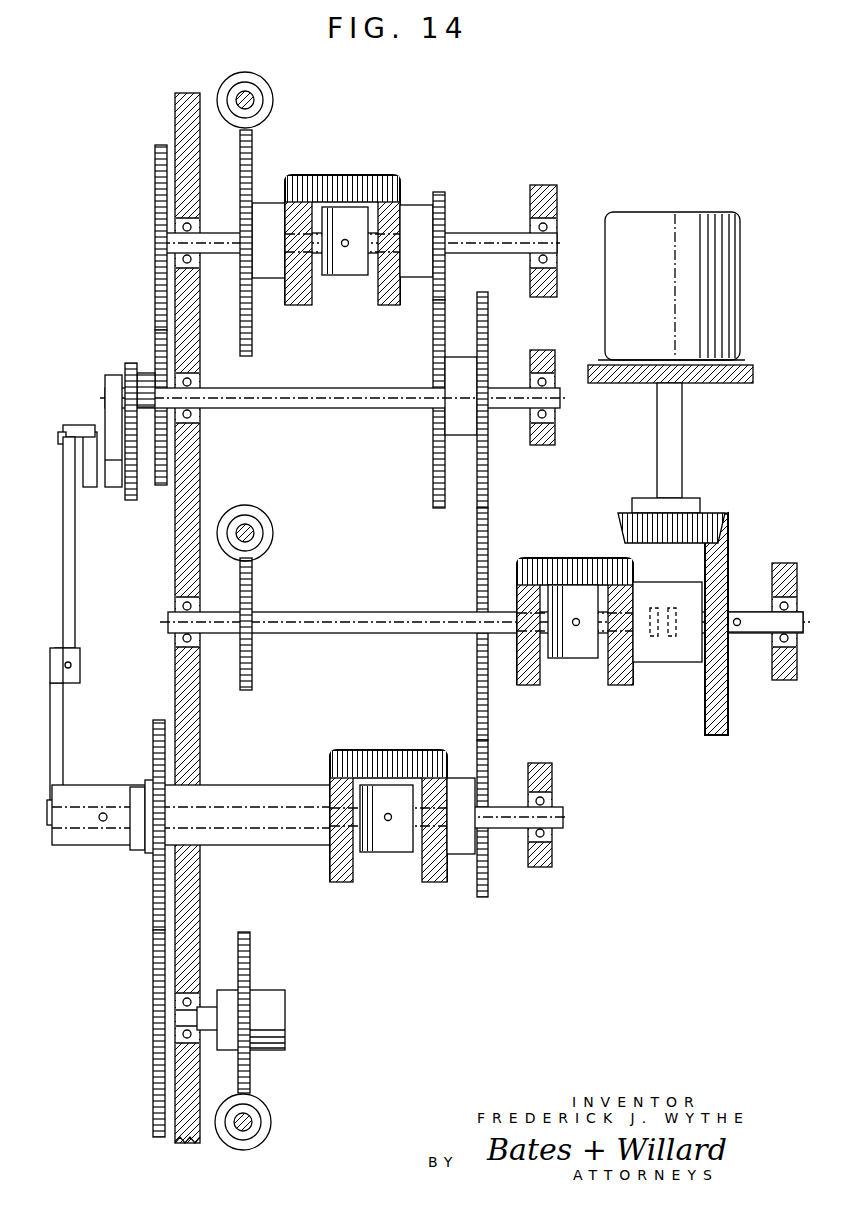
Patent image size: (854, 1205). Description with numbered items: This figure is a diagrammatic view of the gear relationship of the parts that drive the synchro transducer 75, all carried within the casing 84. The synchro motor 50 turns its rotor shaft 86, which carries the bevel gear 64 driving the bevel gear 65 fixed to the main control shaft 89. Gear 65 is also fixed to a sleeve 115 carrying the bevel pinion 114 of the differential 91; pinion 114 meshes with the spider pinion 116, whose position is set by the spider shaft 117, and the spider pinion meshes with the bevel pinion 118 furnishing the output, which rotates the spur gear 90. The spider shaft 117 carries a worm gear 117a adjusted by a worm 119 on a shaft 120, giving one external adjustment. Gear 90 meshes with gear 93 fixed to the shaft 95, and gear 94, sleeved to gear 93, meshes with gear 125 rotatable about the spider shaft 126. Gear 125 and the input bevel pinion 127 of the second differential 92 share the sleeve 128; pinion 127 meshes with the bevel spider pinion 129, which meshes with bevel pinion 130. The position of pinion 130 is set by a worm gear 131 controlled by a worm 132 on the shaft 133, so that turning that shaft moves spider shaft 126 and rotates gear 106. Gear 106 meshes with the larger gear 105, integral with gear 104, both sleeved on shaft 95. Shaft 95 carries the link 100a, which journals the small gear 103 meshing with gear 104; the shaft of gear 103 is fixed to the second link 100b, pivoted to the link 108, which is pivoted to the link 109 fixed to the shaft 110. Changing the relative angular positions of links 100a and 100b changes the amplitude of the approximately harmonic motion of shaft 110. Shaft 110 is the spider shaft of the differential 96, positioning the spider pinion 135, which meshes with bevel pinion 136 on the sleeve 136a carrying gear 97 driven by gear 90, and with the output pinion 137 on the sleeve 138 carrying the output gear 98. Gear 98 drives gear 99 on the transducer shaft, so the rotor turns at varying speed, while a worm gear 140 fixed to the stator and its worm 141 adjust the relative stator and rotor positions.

The synchro motor 50 is at (668, 214).
The bevel gear 64 is at (628, 520).
The bevel gear 65 is at (729, 548).
The synchro transducer 75 is at (273, 991).
The casing 84 is at (182, 102).
The rotor shaft 86 is at (683, 440).
The main control shaft 89 is at (760, 612).
The spur gear 90 is at (490, 538).
The differential 91 is at (578, 660).
The second differential 92 is at (355, 277).
The gear 93 is at (490, 314).
The gear 94 is at (433, 340).
The shaft 95 is at (302, 390).
The differential 96 is at (393, 860).
The gear 97 is at (488, 760).
The output gear 98 is at (153, 888).
The gear 99 is at (153, 995).
The link 100a is at (92, 430).
The second link 100b is at (80, 428).
The small gear 103 is at (115, 490).
The gear 104 is at (130, 362).
The larger gear 105 is at (160, 490).
The gear 106 is at (155, 182).
The link 108 is at (76, 562).
The second link 109 is at (63, 722).
The shaft 110 is at (78, 805).
The bevel pinion 114 is at (615, 686).
The sleeve 115 is at (668, 590).
The spider pinion 116 is at (588, 558).
The spider shaft 117 is at (415, 612).
The worm gear 117a is at (254, 582).
The bevel pinion 118 is at (528, 686).
The worm 119 is at (258, 515).
The shaft 120 is at (252, 532).
The gear 125 is at (447, 208).
The spider shaft 126 is at (453, 238).
The input bevel pinion 127 is at (402, 195).
The sleeve 128 is at (415, 210).
The bevel spider pinion 129 is at (345, 180).
The bevel pinion 130 is at (302, 298).
The worm gear 131 is at (254, 148).
The worm 132 is at (272, 95).
The shaft 133 is at (245, 90).
The spider pinion 135 is at (390, 750).
The bevel pinion 136 is at (440, 882).
The sleeve 136a is at (460, 780).
The output pinion 137 is at (330, 870).
The sleeve 138 is at (272, 785).
The worm gear 140 is at (252, 948).
The worm 141 is at (268, 1105).